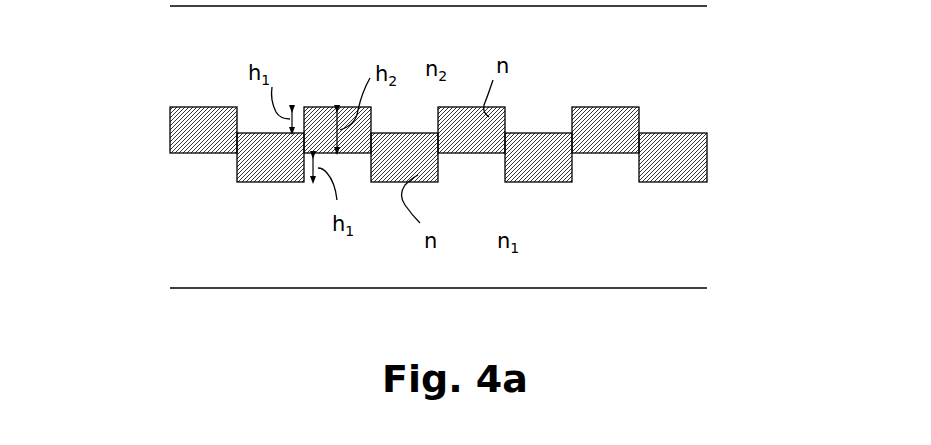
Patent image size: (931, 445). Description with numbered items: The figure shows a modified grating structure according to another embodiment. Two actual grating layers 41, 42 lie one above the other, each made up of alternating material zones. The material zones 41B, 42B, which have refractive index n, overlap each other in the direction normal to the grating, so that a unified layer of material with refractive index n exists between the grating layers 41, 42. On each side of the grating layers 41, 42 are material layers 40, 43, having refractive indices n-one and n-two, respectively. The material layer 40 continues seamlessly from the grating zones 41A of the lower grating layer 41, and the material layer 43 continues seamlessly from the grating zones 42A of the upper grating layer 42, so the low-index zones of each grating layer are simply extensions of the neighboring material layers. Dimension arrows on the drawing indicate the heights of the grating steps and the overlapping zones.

The material layer 40 is at (147, 182).
The grating layer 41 is at (438, 191).
The grating zone 41A is at (617, 173).
The material zone 41B is at (698, 163).
The grating layer 42 is at (438, 94).
The grating zone 42A is at (672, 117).
The material zone 42B is at (612, 117).
The material layer 43 is at (147, 6).